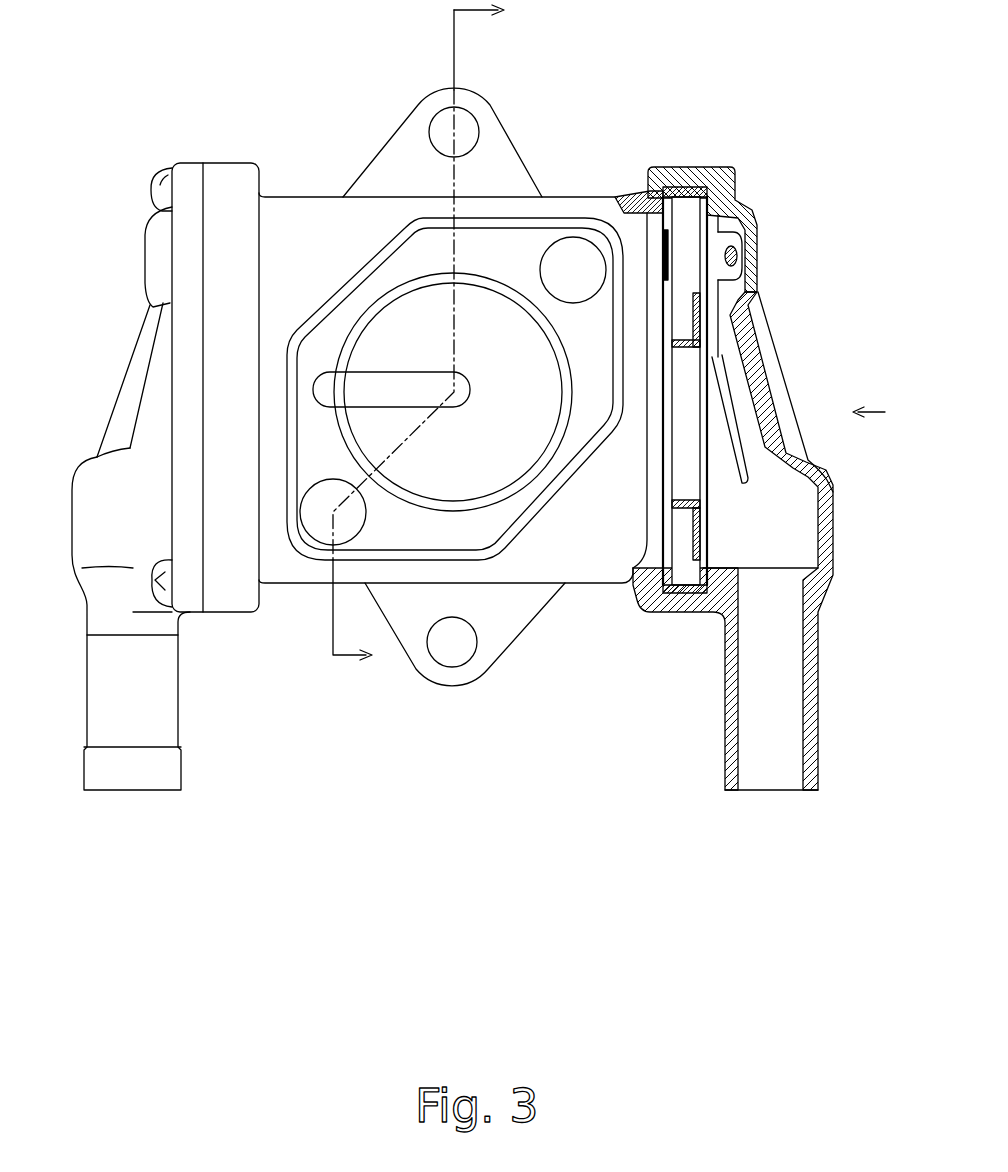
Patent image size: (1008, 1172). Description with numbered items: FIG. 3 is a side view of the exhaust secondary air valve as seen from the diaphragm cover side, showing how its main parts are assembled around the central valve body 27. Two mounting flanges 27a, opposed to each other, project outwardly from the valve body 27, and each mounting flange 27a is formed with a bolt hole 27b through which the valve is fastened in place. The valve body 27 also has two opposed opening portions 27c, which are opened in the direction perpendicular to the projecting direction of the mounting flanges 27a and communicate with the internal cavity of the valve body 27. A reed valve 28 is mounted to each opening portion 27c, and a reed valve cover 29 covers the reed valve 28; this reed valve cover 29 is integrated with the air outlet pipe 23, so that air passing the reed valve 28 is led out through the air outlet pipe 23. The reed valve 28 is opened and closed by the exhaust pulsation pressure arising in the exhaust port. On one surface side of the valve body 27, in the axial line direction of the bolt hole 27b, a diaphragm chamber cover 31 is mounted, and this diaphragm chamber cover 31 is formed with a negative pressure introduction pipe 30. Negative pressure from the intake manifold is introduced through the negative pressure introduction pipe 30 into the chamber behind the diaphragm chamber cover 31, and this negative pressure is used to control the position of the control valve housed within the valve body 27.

The air outlet pipe 23 is at (146, 704).
The valve body 27 is at (320, 258).
The mounting flange 27a is at (398, 158).
The bolt hole 27b is at (466, 127).
The opening portion 27c is at (632, 587).
The reed valve 28 is at (733, 476).
The reed valve cover 29 is at (114, 378).
The negative pressure introduction pipe 30 is at (368, 387).
The diaphragm chamber cover 31 is at (518, 429).